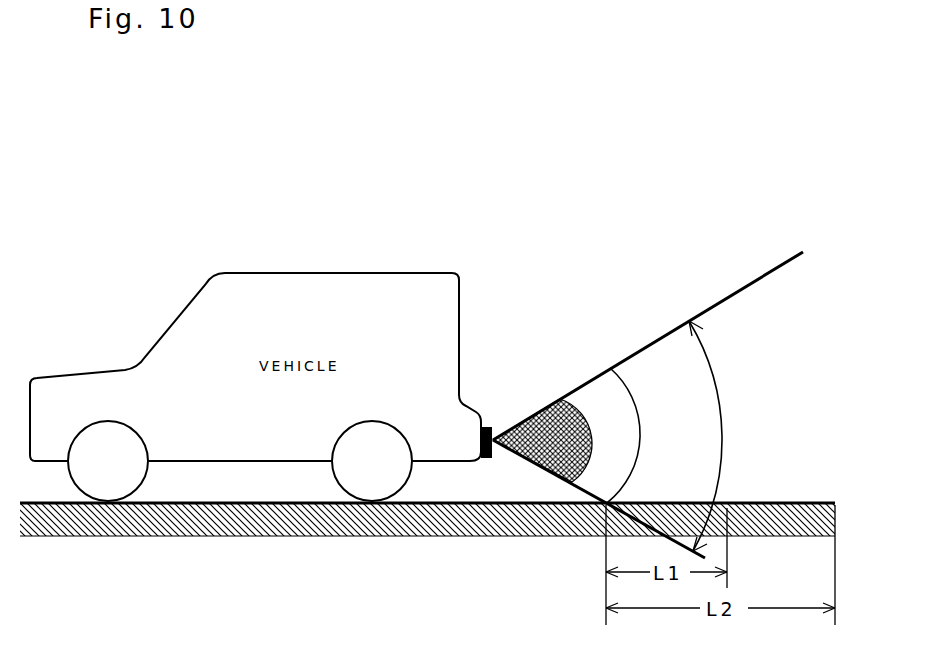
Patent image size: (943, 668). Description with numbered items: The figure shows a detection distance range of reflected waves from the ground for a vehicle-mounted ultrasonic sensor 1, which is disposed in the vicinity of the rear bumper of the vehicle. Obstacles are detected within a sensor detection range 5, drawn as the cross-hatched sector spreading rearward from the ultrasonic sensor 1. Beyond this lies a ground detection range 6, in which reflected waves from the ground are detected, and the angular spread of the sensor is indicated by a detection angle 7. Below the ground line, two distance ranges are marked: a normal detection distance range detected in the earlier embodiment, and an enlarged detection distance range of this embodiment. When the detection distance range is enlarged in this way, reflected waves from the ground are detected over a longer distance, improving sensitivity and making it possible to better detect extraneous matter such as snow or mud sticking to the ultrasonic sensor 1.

The ultrasonic sensor 1 is at (486, 427).
The sensor detection range 5 is at (538, 462).
The ground detection range 6 is at (630, 395).
The detection angle 7 is at (713, 372).